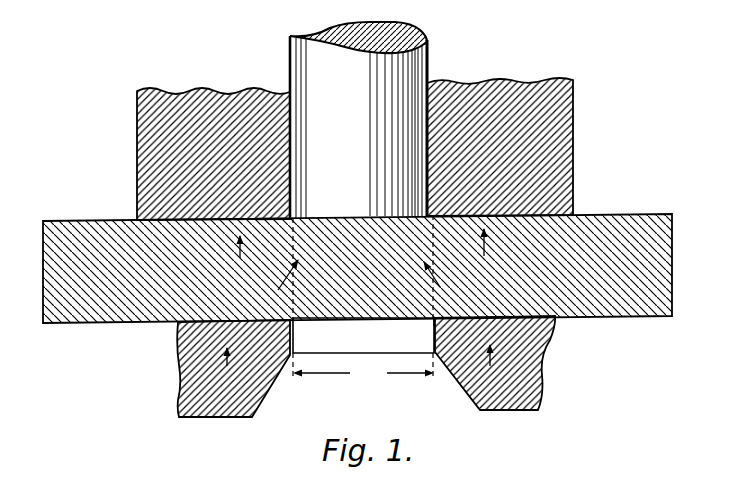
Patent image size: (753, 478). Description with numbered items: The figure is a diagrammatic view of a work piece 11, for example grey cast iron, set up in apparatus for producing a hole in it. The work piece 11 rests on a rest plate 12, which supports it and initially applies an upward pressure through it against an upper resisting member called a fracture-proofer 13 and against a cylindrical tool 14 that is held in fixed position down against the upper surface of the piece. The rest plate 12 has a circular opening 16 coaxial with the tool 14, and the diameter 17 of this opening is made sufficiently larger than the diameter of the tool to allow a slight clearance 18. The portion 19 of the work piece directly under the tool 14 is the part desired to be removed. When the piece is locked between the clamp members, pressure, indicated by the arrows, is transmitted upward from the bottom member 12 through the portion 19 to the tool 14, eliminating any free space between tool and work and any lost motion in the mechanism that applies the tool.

The work piece 11 is at (640, 218).
The rest plate 12 is at (532, 340).
The fracture-proofer 13 is at (575, 152).
The cylindrical tool 14 is at (412, 68).
The circular opening 16 is at (339, 345).
The diameter of circular opening 17 is at (363, 374).
The clearance 18 is at (431, 322).
The portion of piece directly under the tool 19 is at (352, 292).